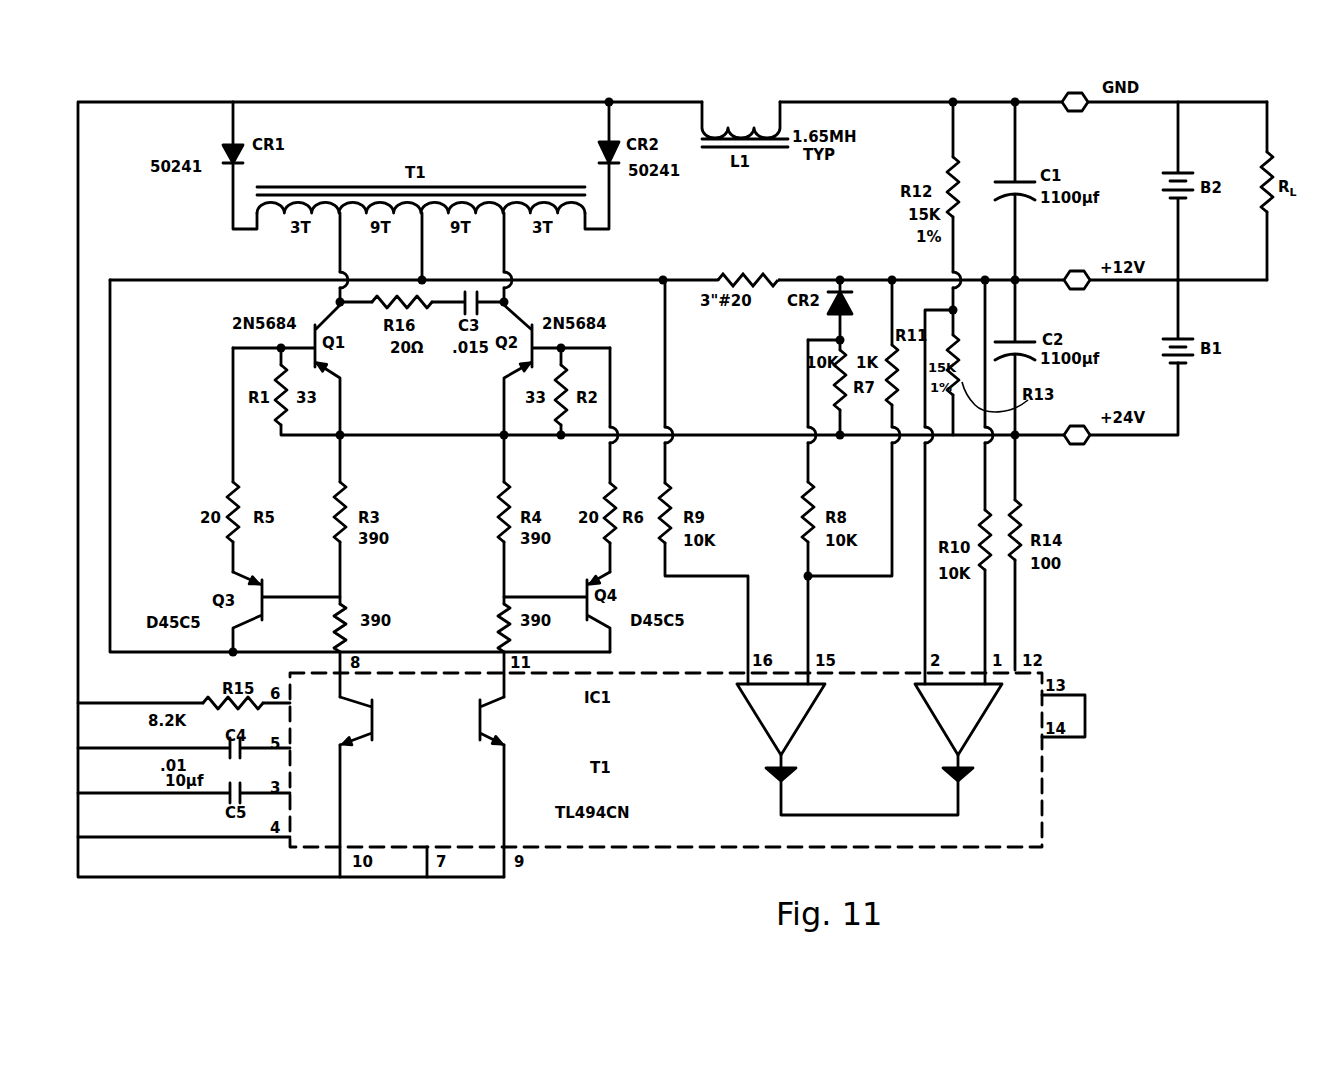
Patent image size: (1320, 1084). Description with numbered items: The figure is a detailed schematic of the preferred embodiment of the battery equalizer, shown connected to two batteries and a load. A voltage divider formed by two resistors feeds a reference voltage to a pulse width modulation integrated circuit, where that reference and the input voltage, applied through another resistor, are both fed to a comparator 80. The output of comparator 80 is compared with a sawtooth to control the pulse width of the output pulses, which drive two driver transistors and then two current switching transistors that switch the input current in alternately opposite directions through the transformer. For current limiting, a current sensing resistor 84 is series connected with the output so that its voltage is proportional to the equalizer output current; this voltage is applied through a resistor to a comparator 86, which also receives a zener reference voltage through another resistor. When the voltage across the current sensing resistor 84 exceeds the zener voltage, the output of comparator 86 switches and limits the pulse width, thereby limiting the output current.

The current sensing resistor 84 is at (766, 272).
The comparator 86 is at (781, 711).
The comparator 80 is at (960, 714).